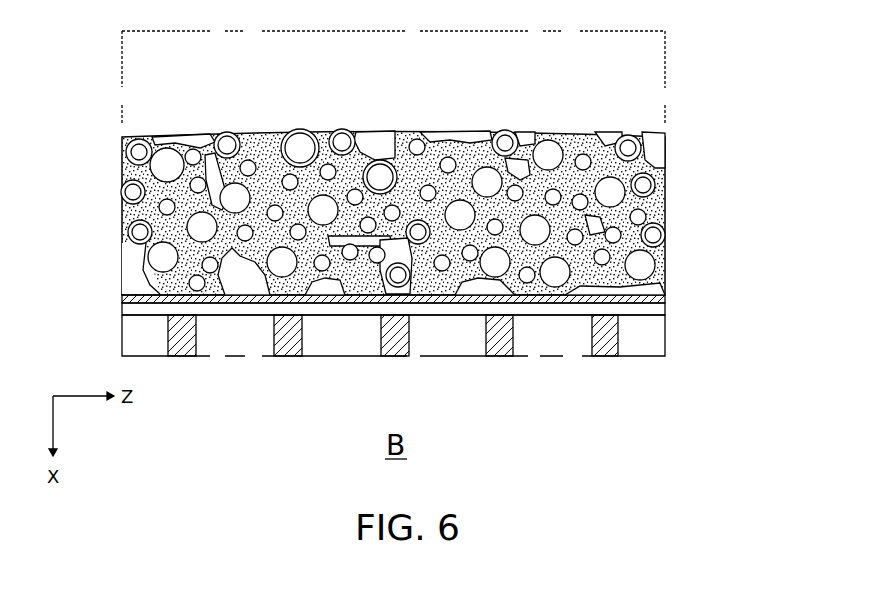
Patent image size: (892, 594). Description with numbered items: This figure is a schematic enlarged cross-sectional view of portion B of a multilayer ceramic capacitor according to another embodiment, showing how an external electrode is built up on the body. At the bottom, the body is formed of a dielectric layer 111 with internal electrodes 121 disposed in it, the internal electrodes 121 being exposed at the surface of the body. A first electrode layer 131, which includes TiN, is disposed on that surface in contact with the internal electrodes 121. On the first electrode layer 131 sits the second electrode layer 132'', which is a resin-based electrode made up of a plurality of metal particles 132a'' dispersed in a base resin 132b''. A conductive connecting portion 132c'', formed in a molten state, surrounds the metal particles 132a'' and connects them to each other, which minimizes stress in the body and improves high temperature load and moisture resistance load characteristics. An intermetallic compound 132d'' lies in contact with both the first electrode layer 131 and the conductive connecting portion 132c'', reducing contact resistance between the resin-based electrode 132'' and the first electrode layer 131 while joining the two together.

The second electrode layer 132'' is at (470, 212).
The metal particles 132a'' is at (673, 192).
The base resin 132b'' is at (683, 148).
The conductive connecting portion 132c'' is at (690, 210).
The intermetallic compound 132d'' is at (437, 283).
The first electrode layer 131 is at (665, 309).
The dielectric layer 111 is at (550, 342).
The internal electrodes 121 is at (611, 346).